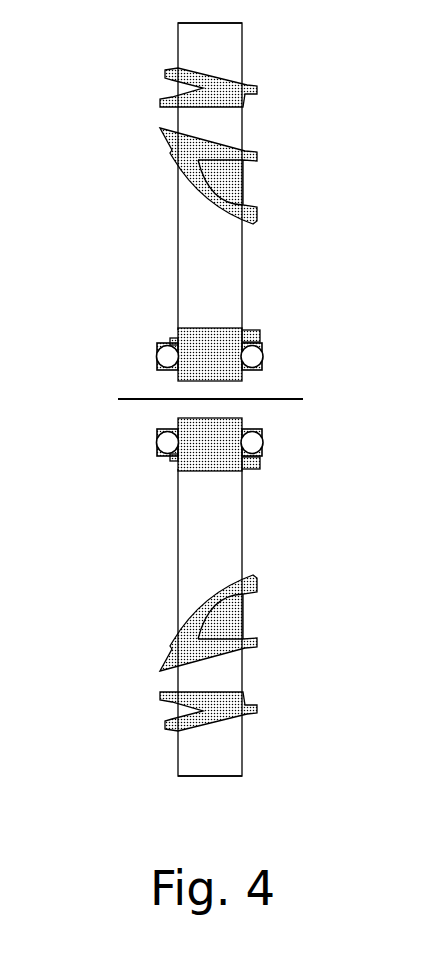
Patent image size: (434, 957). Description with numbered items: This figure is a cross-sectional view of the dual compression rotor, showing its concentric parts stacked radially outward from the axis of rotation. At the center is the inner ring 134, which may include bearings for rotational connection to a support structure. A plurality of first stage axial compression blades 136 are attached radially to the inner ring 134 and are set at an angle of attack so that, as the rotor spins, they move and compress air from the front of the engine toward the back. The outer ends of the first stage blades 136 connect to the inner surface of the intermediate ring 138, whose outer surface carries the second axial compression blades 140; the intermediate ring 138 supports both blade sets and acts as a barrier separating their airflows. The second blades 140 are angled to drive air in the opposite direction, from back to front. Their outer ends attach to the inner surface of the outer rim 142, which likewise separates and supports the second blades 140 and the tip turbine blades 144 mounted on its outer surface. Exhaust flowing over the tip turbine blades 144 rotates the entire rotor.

The inner ring 134 is at (217, 348).
The first stage axial compression blades 136 is at (200, 262).
The intermediate ring 138 is at (240, 183).
The second axial compression blades 140 is at (207, 123).
The outer rim 142 is at (218, 88).
The tip turbine blades 144 is at (208, 52).